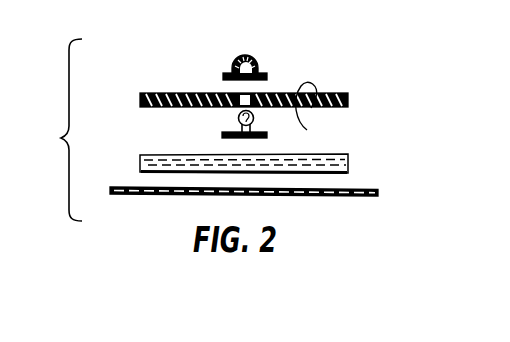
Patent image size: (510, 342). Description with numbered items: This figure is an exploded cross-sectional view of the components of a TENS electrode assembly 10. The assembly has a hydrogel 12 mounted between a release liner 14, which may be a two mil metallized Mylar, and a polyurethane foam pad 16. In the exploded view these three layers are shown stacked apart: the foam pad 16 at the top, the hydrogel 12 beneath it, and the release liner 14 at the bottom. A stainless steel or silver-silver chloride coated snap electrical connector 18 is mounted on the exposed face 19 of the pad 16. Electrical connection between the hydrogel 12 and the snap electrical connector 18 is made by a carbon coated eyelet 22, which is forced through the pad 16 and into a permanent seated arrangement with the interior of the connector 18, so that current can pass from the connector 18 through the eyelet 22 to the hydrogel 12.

The TENS electrode assembly 10 is at (178, 57).
The hydrogel 12 is at (157, 156).
The release liner 14 is at (158, 195).
The polyurethane foam pad 16 is at (343, 108).
The snap electrical connector 18 is at (257, 58).
The exposed face 19 is at (312, 116).
The carbon coated eyelet 22 is at (240, 112).